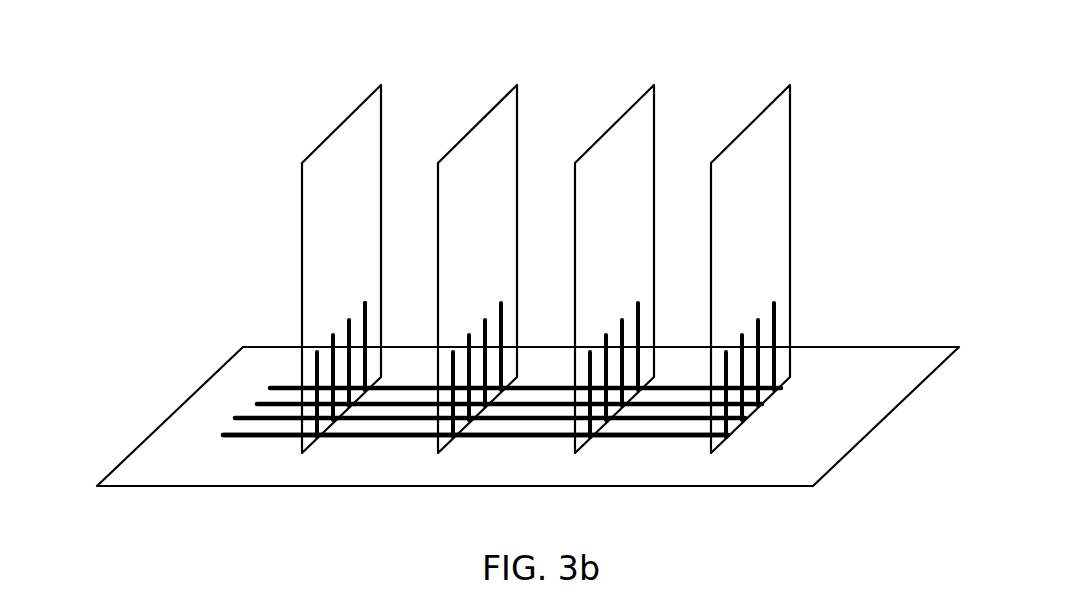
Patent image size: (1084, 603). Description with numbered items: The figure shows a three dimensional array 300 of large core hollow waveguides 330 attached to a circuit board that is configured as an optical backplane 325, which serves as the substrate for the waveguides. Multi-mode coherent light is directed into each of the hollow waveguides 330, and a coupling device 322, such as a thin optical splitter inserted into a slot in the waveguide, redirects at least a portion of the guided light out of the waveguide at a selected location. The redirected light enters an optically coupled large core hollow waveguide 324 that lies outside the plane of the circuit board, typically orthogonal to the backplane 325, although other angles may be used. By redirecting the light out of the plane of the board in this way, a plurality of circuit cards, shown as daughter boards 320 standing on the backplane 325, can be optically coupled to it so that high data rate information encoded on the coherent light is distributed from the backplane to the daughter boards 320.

The array 300 is at (335, 322).
The daughter boards 320 is at (330, 135).
The coupling device 322 is at (783, 388).
The large core hollow waveguide 324 is at (776, 310).
The optical backplane 325 is at (137, 445).
The hollow waveguides 330 is at (365, 305).